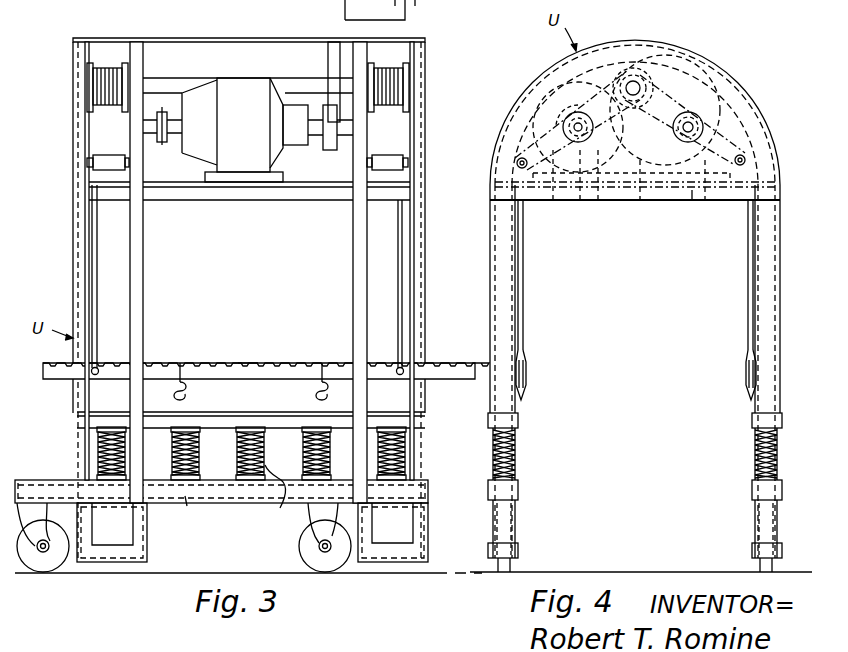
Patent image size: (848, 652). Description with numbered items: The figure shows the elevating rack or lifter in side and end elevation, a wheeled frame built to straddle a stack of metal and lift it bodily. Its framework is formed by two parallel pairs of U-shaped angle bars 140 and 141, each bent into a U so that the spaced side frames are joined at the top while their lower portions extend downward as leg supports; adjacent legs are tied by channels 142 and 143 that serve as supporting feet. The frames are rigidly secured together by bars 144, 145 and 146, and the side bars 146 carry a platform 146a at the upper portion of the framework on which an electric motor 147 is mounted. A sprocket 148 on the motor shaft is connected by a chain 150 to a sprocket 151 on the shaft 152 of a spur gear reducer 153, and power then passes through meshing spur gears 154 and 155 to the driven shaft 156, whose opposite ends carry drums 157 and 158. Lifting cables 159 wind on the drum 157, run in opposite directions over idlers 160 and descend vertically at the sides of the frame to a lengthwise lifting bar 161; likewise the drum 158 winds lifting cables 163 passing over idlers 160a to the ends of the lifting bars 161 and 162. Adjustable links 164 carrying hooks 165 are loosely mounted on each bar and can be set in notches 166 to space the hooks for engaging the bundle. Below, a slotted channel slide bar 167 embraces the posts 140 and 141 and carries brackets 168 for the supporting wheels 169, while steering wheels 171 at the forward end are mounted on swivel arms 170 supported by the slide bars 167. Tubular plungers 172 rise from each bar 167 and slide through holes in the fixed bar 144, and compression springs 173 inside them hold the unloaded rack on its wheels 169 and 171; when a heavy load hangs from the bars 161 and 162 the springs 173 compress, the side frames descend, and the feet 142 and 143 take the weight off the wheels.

In FIG. 3, the U-shaped angle bar 140 is at (367, 222).
In FIG. 4, the U-shaped angle bar 140 is at (500, 255).
In FIG. 3, the U-shaped angle bar 141 is at (85, 258).
In FIG. 3, the channel 142 is at (420, 553).
In FIG. 4, the channel 142 is at (518, 553).
In FIG. 3, the channel 143 is at (147, 553).
In FIG. 3, the bar 144 is at (388, 413).
In FIG. 4, the bar 144 is at (635, 420).
In FIG. 3, the bar 145 is at (266, 48).
In FIG. 3, the side bar 146 is at (330, 192).
In FIG. 3, the platform 146a is at (193, 183).
In FIG. 4, the platform 146a is at (596, 200).
In FIG. 4, the electric motor 147 is at (730, 117).
In FIG. 4, the sprocket 148 is at (692, 200).
In FIG. 3, the chain 150 is at (157, 142).
In FIG. 4, the chain 150 is at (628, 190).
In FIG. 3, the sprocket 151 is at (157, 126).
In FIG. 4, the sprocket 151 is at (570, 150).
In FIG. 3, the shaft 152 is at (172, 128).
In FIG. 3, the spur gear reducer 153 is at (232, 130).
In FIG. 4, the spur gear reducer 153 is at (578, 82).
In FIG. 3, the spur gear 154 is at (328, 148).
In FIG. 4, the spur gear 154 is at (640, 185).
In FIG. 3, the spur gear 155 is at (328, 55).
In FIG. 4, the spur gear 155 is at (680, 50).
In FIG. 3, the driven shaft 156 is at (183, 78).
In FIG. 3, the drum 157 is at (372, 63).
In FIG. 4, the drum 157 is at (617, 55).
In FIG. 3, the drum 158 is at (127, 63).
In FIG. 3, the lifting cable 159 is at (402, 268).
In FIG. 4, the lifting cable 159 is at (538, 95).
In FIG. 3, the idler 160 is at (383, 153).
In FIG. 4, the idler 160 is at (518, 158).
In FIG. 3, the idler 160a is at (105, 155).
In FIG. 3, the lifting bar 161 is at (200, 363).
In FIG. 4, the lifting bar 161 is at (527, 374).
In FIG. 4, the lifting bar 162 is at (750, 368).
In FIG. 3, the lifting cable 163 is at (93, 238).
In FIG. 3, the adjustable link 164 is at (180, 363).
In FIG. 3, the hook 165 is at (316, 394).
In FIG. 3, the notch 166 is at (252, 362).
In FIG. 3, the slide bar 167 is at (197, 509).
In FIG. 4, the slide bar 167 is at (519, 488).
In FIG. 3, the bracket 168 is at (315, 515).
In FIG. 3, the supporting wheel 169 is at (334, 564).
In FIG. 4, the supporting wheel 169 is at (503, 572).
In FIG. 3, the swivel arm 170 is at (35, 515).
In FIG. 3, the steering wheel 171 is at (43, 570).
In FIG. 3, the tubular plunger 172 is at (271, 494).
In FIG. 3, the compression spring 173 is at (304, 450).
In FIG. 4, the compression spring 173 is at (520, 446).